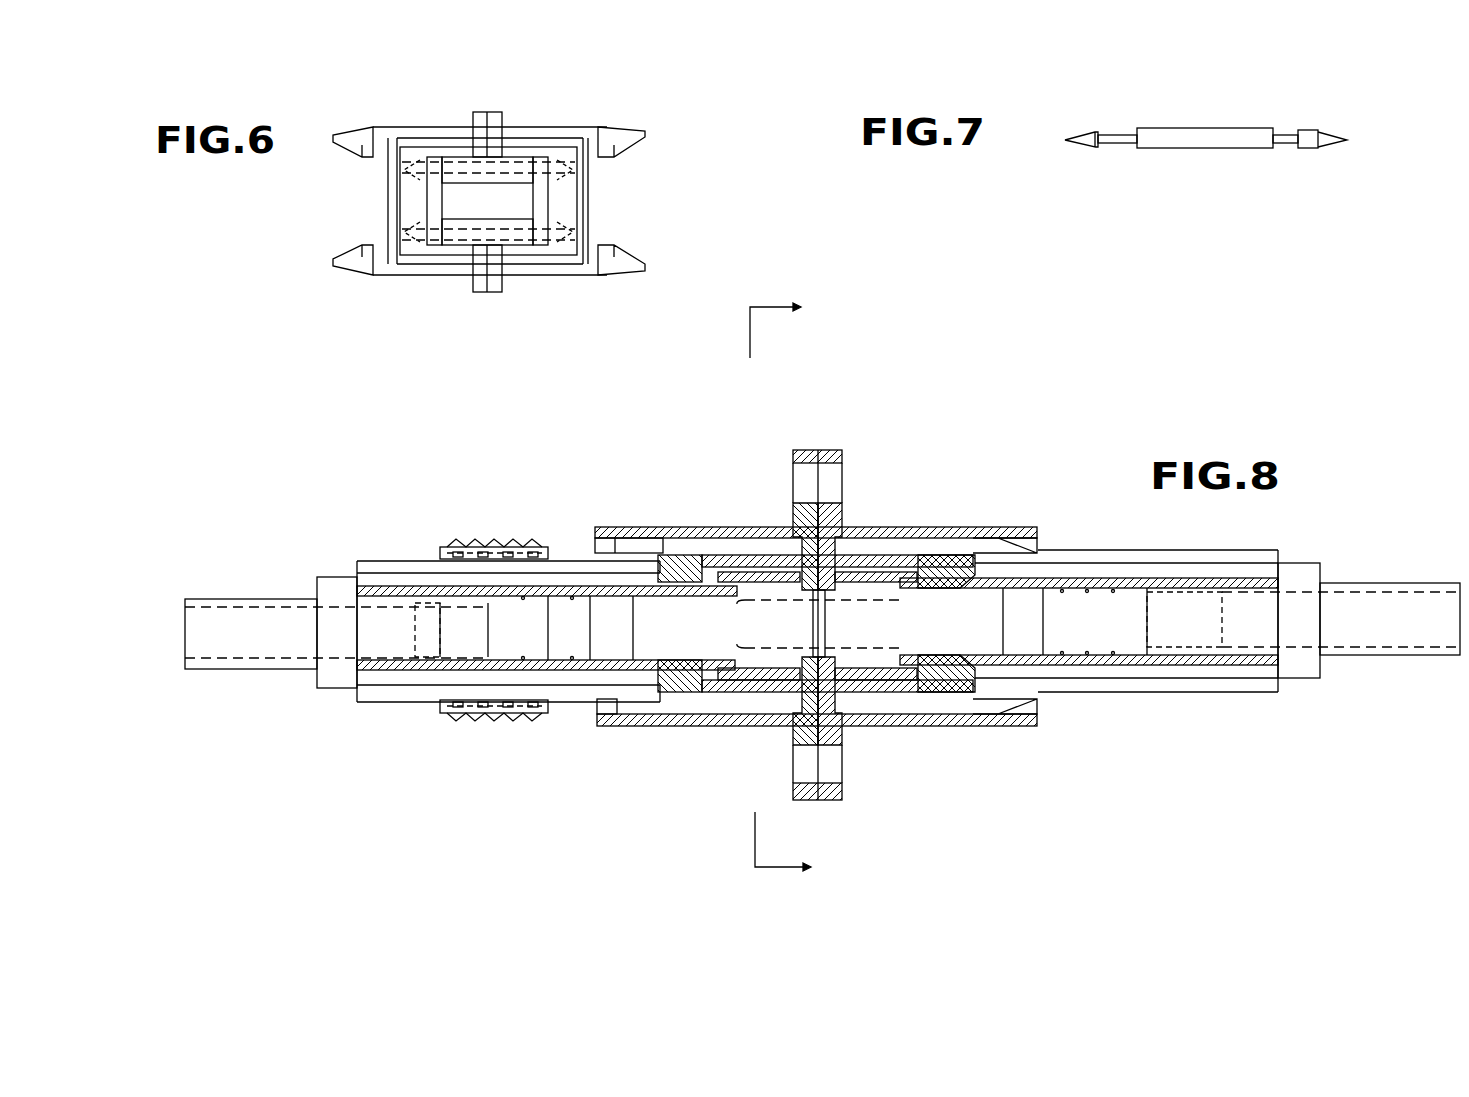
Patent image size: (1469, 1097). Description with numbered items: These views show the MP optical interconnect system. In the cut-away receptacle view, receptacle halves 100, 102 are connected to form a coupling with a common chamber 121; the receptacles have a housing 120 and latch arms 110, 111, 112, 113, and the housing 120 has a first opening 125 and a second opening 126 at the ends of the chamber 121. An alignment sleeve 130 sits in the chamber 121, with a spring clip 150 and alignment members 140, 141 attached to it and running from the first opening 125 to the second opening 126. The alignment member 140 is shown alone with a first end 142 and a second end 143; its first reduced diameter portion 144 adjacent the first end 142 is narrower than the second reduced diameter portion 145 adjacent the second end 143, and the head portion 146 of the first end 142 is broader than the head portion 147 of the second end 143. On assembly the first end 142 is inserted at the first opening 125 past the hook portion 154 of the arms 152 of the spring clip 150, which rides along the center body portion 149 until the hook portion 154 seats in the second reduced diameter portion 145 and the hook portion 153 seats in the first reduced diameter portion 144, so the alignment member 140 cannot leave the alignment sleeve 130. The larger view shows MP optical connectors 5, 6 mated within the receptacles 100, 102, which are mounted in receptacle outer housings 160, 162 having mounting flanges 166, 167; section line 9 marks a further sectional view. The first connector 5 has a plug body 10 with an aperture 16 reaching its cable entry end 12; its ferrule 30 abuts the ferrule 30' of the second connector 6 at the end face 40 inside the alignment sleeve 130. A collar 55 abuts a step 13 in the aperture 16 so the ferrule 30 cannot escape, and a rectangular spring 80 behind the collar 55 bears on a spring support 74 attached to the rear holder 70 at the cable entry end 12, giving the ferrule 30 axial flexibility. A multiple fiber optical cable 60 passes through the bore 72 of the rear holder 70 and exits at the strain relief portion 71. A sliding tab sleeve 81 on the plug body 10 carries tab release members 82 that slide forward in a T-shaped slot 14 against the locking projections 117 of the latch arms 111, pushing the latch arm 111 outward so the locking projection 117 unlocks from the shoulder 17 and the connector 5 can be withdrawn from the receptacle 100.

In FIG. 8, the MP optical connector 5 is at (390, 735).
In FIG. 8, the second connector 6 is at (1252, 735).
In FIG. 8, the section line 9 is at (791, 588).
In FIG. 8, the plug body 10 is at (576, 570).
In FIG. 8, the cable entry end 12 is at (340, 690).
In FIG. 8, the step 13 is at (630, 704).
In FIG. 8, the T-shaped slot 14 is at (530, 670).
In FIG. 8, the aperture 16 is at (680, 592).
In FIG. 8, the shoulder 17 is at (707, 598).
In FIG. 8, the ferrule 30 is at (649, 762).
In FIG. 8, the ferrule of second connector 30' is at (1112, 681).
In FIG. 8, the end face 40 is at (822, 615).
In FIG. 8, the collar 55 is at (563, 690).
In FIG. 8, the multiple fiber optical cable 60 is at (200, 622).
In FIG. 8, the rear holder 70 is at (334, 590).
In FIG. 8, the strain relief portion 71 is at (265, 598).
In FIG. 8, the bore 72 is at (305, 650).
In FIG. 8, the spring support 74 is at (428, 628).
In FIG. 8, the resilient member 80 is at (507, 608).
In FIG. 8, the sliding tab sleeve 81 is at (447, 717).
In FIG. 8, the tab release members 82 is at (672, 568).
In FIG. 6, the receptacle half 100 is at (440, 132).
In FIG. 8, the receptacle half 100 is at (778, 560).
In FIG. 6, the receptacle half 102 is at (530, 128).
In FIG. 8, the receptacle half 102 is at (897, 540).
In FIG. 6, the latch arm 110 is at (387, 270).
In FIG. 6, the latch arm 111 is at (382, 133).
In FIG. 8, the latch arm 111 is at (710, 565).
In FIG. 6, the latch arm 112 is at (594, 130).
In FIG. 6, the latch arm 113 is at (590, 270).
In FIG. 8, the locking projection 117 is at (697, 578).
In FIG. 6, the housing 120 is at (417, 183).
In FIG. 8, the housing 120 is at (738, 688).
In FIG. 6, the chamber 121 is at (512, 160).
In FIG. 8, the chamber 121 is at (768, 682).
In FIG. 6, the first opening 125 is at (393, 213).
In FIG. 6, the second opening 126 is at (587, 220).
In FIG. 6, the alignment sleeve 130 is at (417, 200).
In FIG. 8, the alignment sleeve 130 is at (905, 722).
In FIG. 6, the alignment member 140 is at (468, 167).
In FIG. 7, the alignment member 140 is at (1190, 108).
In FIG. 8, the alignment member 140 is at (945, 583).
In FIG. 6, the alignment member 141 is at (457, 240).
In FIG. 8, the alignment member 141 is at (888, 660).
In FIG. 7, the first end 142 is at (1325, 132).
In FIG. 7, the second end 143 is at (1085, 134).
In FIG. 7, the first reduced diameter portion 144 is at (1285, 145).
In FIG. 7, the second reduced diameter portion 145 is at (1125, 135).
In FIG. 7, the head portion 146 is at (1306, 150).
In FIG. 7, the head portion 147 is at (1096, 148).
In FIG. 7, the center body portion 149 is at (1250, 130).
In FIG. 6, the spring clip 150 is at (533, 198).
In FIG. 6, the arms 152 is at (527, 233).
In FIG. 6, the hook portion 153 is at (540, 157).
In FIG. 6, the hook portion 154 is at (433, 157).
In FIG. 8, the receptacle outer housing 160 is at (620, 525).
In FIG. 8, the receptacle outer housing 162 is at (1010, 527).
In FIG. 8, the mounting flange 166 is at (830, 455).
In FIG. 8, the mounting flange 167 is at (806, 452).